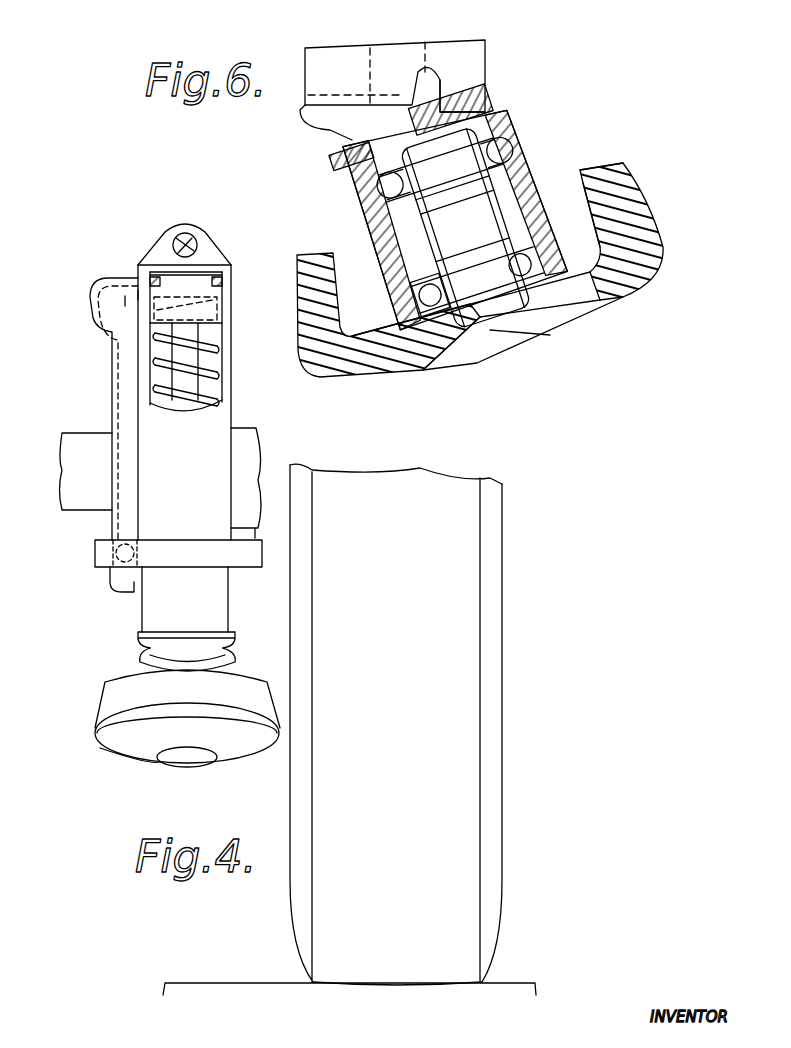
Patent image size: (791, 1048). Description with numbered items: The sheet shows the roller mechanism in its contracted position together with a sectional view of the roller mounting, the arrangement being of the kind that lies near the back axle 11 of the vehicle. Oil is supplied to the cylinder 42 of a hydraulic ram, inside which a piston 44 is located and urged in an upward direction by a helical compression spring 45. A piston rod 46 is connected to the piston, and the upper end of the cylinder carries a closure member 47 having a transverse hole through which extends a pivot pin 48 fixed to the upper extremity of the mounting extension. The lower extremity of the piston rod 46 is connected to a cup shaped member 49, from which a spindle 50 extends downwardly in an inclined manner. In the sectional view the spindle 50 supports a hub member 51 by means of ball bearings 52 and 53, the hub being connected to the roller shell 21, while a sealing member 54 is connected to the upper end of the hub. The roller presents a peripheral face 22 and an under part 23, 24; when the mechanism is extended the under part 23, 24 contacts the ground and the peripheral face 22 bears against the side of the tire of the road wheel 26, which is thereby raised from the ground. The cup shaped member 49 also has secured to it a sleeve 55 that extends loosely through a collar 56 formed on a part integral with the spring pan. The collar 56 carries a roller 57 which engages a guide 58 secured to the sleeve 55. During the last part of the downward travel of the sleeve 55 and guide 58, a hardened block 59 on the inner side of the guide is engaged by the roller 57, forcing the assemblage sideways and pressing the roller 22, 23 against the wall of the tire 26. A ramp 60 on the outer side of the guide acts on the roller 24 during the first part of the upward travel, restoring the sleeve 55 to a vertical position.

In FIG. 4, the back axle 11 is at (82, 508).
In FIG. 6, the roller shell 21 is at (602, 222).
In FIG. 6, the peripheral face of the roller 22 is at (628, 180).
In FIG. 4, the peripheral face of the roller 22 is at (105, 702).
In FIG. 6, the under part of the roller 23 is at (618, 292).
In FIG. 4, the under part of the roller 23 is at (118, 752).
In FIG. 6, the under part of the roller 24 is at (500, 348).
In FIG. 4, the under part of the roller 24 is at (182, 758).
In FIG. 4, the road wheel (tire) 26 is at (440, 480).
In FIG. 4, the cylinder 42 is at (224, 298).
In FIG. 4, the piston 44 is at (220, 320).
In FIG. 4, the helical compression spring 45 is at (216, 345).
In FIG. 6, the piston rod 46 is at (380, 86).
In FIG. 4, the piston rod 46 is at (210, 366).
In FIG. 4, the closure member 47 is at (150, 262).
In FIG. 4, the pivot pin 48 is at (173, 240).
In FIG. 6, the cup shaped member 49 is at (448, 118).
In FIG. 6, the spindle 50 is at (412, 266).
In FIG. 6, the hub member 51 is at (372, 210).
In FIG. 6, the ball bearing 52 is at (496, 186).
In FIG. 6, the ball bearing 53 is at (428, 296).
In FIG. 6, the sealing member 54 is at (345, 160).
In FIG. 6, the sleeve 55 is at (485, 62).
In FIG. 4, the sleeve 55 is at (142, 612).
In FIG. 4, the collar 56 is at (190, 548).
In FIG. 4, the roller 57 is at (110, 580).
In FIG. 4, the guide 58 is at (112, 398).
In FIG. 4, the hardened block 59 is at (128, 298).
In FIG. 4, the ramp 60 is at (130, 298).